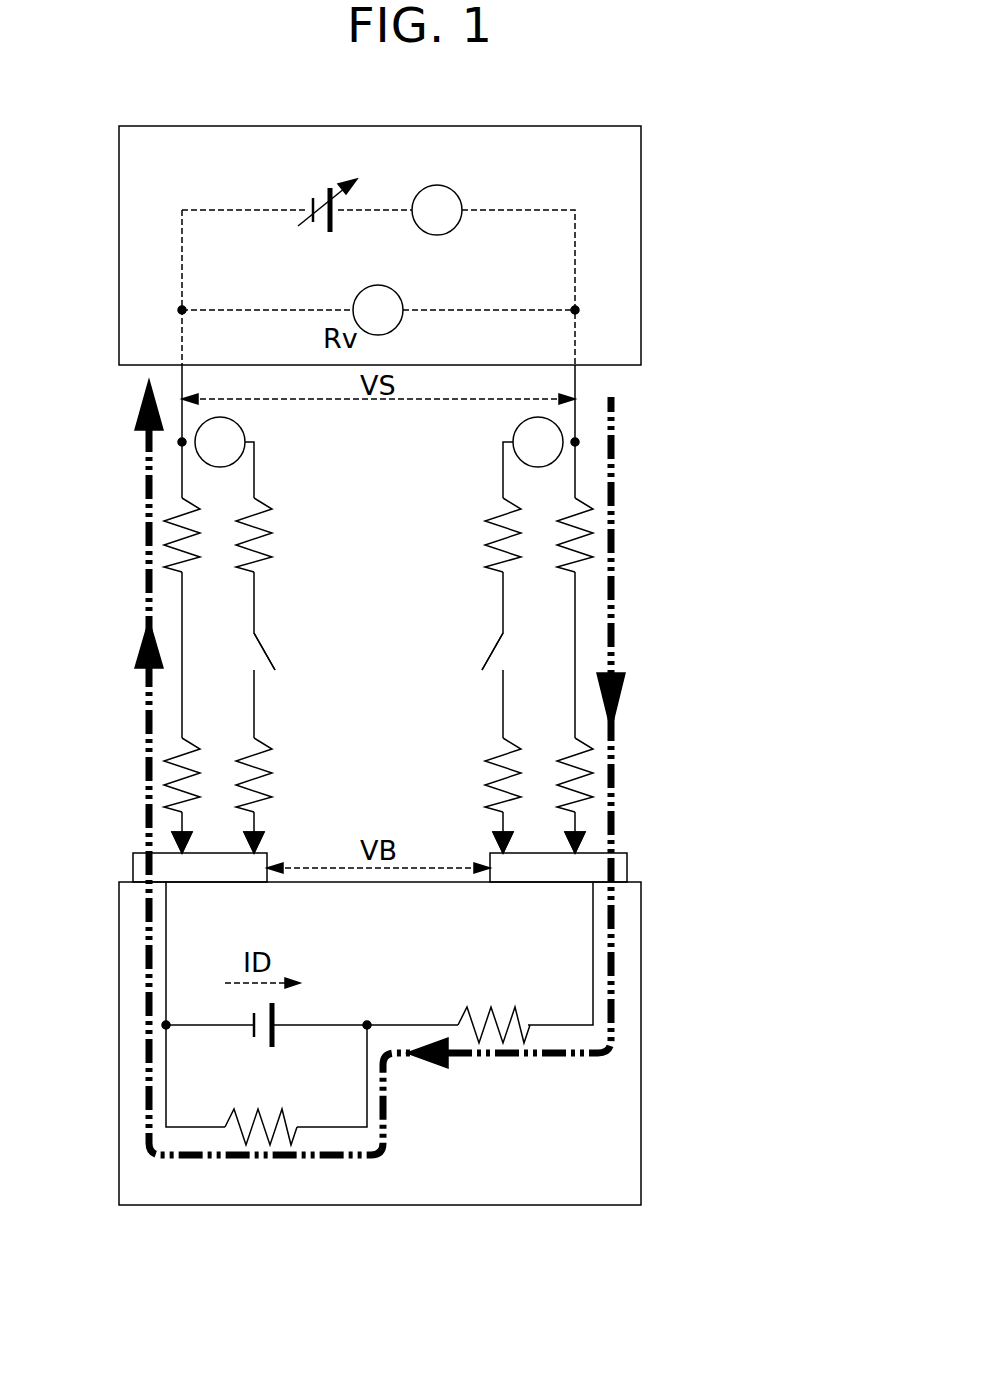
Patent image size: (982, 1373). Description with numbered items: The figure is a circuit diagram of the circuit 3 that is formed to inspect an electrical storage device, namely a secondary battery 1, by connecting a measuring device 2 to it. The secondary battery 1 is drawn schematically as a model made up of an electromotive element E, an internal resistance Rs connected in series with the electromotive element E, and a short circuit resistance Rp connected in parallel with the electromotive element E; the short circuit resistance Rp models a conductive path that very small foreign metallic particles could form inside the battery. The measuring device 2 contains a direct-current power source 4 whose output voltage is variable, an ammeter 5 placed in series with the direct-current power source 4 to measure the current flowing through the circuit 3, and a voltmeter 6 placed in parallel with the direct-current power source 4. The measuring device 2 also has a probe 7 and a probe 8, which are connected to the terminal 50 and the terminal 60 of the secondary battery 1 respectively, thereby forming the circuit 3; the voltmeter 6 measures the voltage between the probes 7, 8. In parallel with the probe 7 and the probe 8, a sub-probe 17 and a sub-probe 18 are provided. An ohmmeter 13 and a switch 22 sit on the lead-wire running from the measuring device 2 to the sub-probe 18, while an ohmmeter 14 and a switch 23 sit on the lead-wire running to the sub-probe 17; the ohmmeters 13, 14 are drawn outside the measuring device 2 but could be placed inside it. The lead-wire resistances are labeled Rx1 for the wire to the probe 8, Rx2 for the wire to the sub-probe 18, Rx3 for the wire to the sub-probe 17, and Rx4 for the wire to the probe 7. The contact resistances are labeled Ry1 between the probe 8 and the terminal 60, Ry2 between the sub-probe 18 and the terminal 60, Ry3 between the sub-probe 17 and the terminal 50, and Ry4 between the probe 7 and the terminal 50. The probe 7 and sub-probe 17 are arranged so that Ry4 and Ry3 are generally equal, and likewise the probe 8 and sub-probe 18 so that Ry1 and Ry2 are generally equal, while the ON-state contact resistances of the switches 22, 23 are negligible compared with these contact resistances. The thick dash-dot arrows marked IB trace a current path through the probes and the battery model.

The secondary battery 1 is at (641, 1182).
The measuring device 2 is at (641, 262).
The circuit 3 is at (700, 350).
The direct-current power source 4 is at (320, 202).
The ammeter 5 is at (458, 196).
The voltmeter 6 is at (402, 300).
The probe 7 is at (583, 845).
The probe 8 is at (172, 842).
The ohmmeter 13 is at (244, 426).
The ohmmeter 14 is at (516, 426).
The sub-probe 17 is at (495, 843).
The sub-probe 18 is at (262, 843).
The switch 22 is at (264, 648).
The switch 23 is at (500, 639).
The terminal 50 is at (627, 866).
The terminal 60 is at (133, 867).
The lead-wire resistance Rx1 is at (167, 520).
The lead-wire resistance Rx2 is at (262, 556).
The lead-wire resistance Rx3 is at (492, 547).
The lead-wire resistance Rx4 is at (590, 512).
The contact resistance Ry1 is at (170, 762).
The contact resistance Ry2 is at (262, 776).
The contact resistance Ry3 is at (492, 772).
The contact resistance Ry4 is at (582, 776).
The electromotive element E is at (250, 1030).
The short circuit resistance Rp is at (261, 1108).
The internal resistance Rs is at (494, 1007).
The battery current IB is at (616, 606).